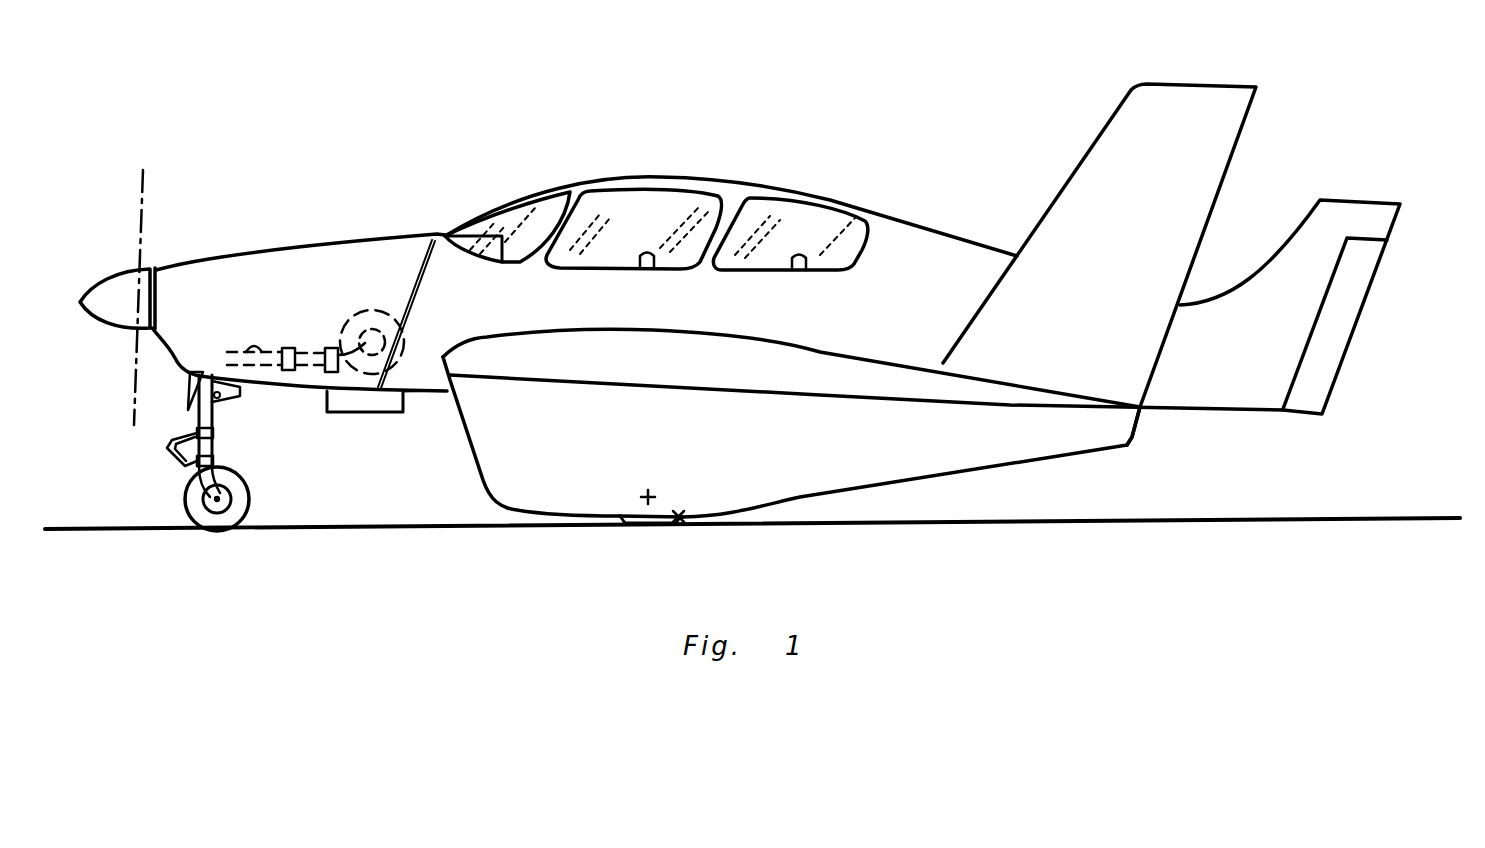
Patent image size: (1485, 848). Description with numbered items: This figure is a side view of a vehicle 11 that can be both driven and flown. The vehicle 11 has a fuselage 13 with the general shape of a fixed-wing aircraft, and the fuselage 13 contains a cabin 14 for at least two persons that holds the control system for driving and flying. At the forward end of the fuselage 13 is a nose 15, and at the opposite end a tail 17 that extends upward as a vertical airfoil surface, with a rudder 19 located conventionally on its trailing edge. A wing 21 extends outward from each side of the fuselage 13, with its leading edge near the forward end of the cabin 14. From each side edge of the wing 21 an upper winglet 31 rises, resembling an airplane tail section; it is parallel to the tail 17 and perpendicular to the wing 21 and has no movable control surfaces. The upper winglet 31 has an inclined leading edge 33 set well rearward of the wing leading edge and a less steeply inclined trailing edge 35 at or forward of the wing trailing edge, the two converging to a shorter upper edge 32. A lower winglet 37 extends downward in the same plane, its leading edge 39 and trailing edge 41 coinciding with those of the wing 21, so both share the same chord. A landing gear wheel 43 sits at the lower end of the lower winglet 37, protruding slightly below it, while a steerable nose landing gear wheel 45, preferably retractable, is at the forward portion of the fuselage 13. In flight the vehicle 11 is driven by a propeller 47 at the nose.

The vehicle 11 is at (882, 140).
The fuselage 13 is at (910, 252).
The cabin 14 is at (643, 208).
The nose 15 is at (154, 268).
The tail 17 is at (1377, 223).
The rudder 19 is at (1327, 365).
The wing 21 is at (847, 352).
The upper winglet 31 is at (1202, 155).
The upper edge 32 is at (1213, 84).
The leading edge 33 is at (1077, 170).
The trailing edge 35 is at (1213, 218).
The lower winglet 37 is at (510, 427).
The leading edge 39 is at (457, 409).
The trailing edge 41 is at (1140, 423).
The landing gear wheel 43 is at (677, 517).
The nose landing gear wheel 45 is at (238, 504).
The propeller 47 is at (143, 228).